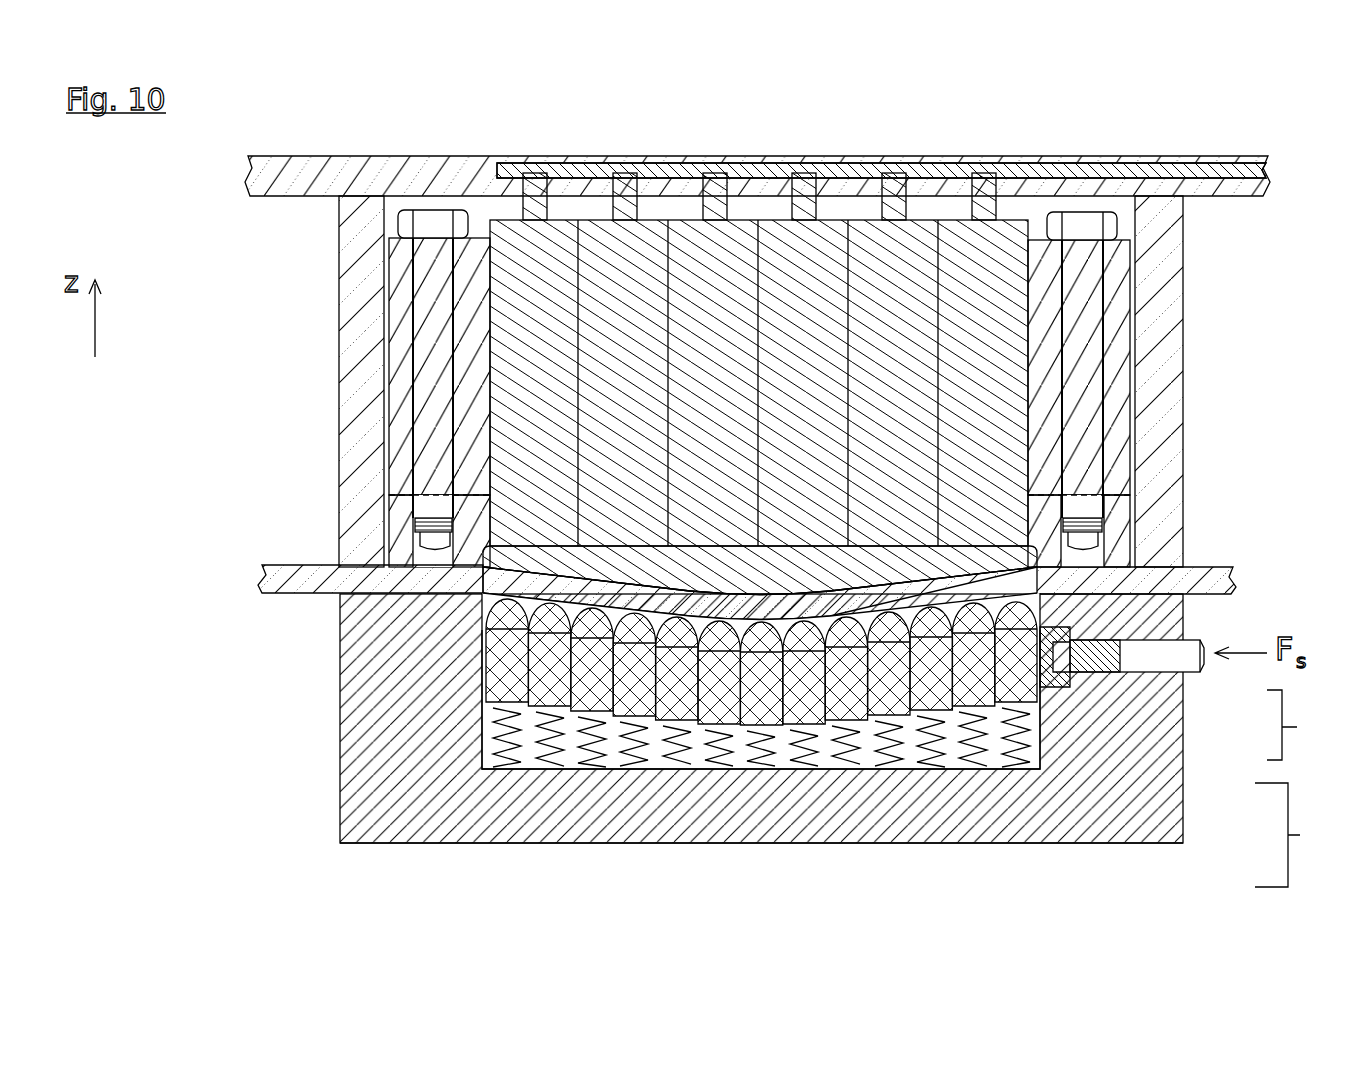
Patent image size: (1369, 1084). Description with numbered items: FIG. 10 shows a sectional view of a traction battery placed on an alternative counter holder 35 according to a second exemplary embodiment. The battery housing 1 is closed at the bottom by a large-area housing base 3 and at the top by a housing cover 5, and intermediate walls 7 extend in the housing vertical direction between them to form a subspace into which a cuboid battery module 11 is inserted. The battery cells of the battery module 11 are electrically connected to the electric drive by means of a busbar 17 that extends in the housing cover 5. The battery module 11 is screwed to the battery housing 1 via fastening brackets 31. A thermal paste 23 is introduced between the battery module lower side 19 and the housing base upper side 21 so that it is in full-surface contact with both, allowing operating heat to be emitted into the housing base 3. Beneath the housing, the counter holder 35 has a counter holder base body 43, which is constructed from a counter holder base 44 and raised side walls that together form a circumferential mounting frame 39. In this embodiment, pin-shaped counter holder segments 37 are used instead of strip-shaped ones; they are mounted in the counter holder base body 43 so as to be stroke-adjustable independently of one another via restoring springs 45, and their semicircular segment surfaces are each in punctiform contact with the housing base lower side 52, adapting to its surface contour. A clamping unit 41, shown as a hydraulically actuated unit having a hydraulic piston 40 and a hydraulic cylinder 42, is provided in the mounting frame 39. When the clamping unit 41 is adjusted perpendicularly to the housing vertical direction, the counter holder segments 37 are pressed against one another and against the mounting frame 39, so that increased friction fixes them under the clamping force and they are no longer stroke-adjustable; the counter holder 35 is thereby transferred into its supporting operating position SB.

The battery housing 1 is at (295, 372).
The housing base 3 is at (282, 594).
The housing cover 5 is at (1198, 190).
The intermediate walls 7 is at (338, 457).
The battery module 11 is at (1046, 309).
The busbar 17 is at (1240, 176).
The battery module lower side 19 is at (745, 586).
The housing base upper side 21 is at (492, 704).
The thermal paste 23 is at (790, 604).
The fastening bracket 31 is at (405, 543).
The counter holder 35 is at (294, 676).
The counter holder segments 37 is at (933, 688).
The mounting frame 39 is at (1113, 755).
The hydraulic piston 40 is at (1057, 676).
The clamping unit 41 is at (1303, 725).
The hydraulic cylinder 42 is at (1200, 673).
The counter holder base body 43 is at (1298, 835).
The counter holder base 44 is at (1095, 834).
The restoring springs 45 is at (707, 723).
The housing base lower side 52 is at (583, 702).
The supporting operating position SB is at (999, 740).